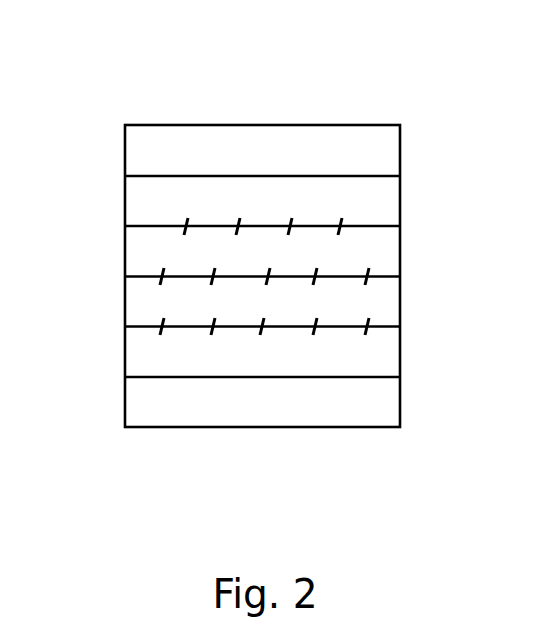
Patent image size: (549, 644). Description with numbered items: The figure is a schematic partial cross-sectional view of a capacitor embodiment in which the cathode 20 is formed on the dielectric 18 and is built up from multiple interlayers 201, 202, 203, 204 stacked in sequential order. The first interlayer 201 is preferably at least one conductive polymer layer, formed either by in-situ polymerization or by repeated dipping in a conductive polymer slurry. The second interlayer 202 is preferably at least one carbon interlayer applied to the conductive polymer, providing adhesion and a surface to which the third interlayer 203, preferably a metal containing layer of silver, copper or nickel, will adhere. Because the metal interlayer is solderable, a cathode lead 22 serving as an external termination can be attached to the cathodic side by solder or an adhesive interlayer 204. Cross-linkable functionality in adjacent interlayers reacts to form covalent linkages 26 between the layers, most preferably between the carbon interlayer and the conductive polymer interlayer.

The dielectric 18 is at (248, 430).
The cathode 20 is at (432, 178).
The cathode lead 22 is at (387, 125).
The covalent linkage 26 is at (162, 276).
The first interlayer 201 is at (132, 356).
The second interlayer 202 is at (133, 305).
The third interlayer 203 is at (133, 251).
The adhesive interlayer 204 is at (388, 187).